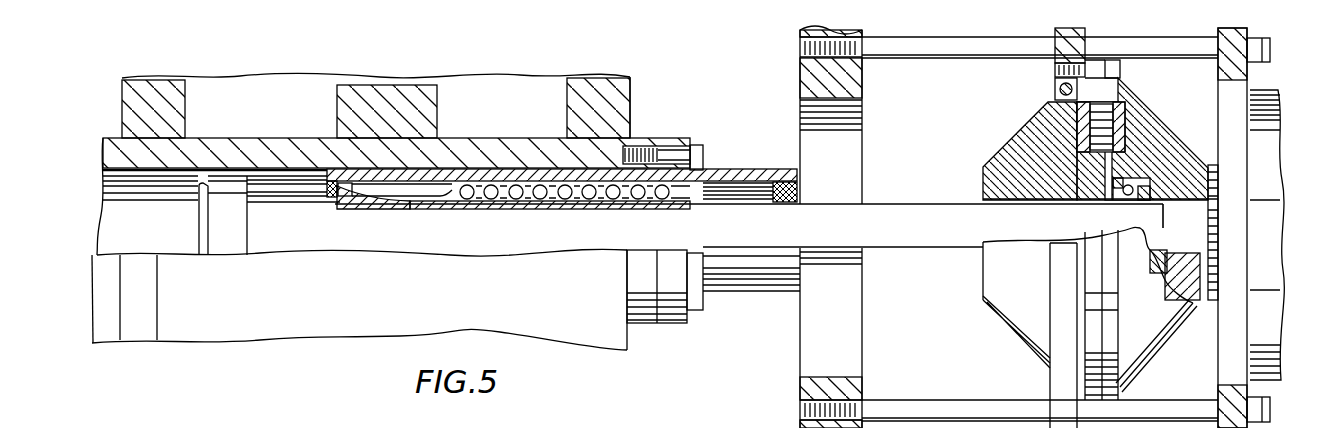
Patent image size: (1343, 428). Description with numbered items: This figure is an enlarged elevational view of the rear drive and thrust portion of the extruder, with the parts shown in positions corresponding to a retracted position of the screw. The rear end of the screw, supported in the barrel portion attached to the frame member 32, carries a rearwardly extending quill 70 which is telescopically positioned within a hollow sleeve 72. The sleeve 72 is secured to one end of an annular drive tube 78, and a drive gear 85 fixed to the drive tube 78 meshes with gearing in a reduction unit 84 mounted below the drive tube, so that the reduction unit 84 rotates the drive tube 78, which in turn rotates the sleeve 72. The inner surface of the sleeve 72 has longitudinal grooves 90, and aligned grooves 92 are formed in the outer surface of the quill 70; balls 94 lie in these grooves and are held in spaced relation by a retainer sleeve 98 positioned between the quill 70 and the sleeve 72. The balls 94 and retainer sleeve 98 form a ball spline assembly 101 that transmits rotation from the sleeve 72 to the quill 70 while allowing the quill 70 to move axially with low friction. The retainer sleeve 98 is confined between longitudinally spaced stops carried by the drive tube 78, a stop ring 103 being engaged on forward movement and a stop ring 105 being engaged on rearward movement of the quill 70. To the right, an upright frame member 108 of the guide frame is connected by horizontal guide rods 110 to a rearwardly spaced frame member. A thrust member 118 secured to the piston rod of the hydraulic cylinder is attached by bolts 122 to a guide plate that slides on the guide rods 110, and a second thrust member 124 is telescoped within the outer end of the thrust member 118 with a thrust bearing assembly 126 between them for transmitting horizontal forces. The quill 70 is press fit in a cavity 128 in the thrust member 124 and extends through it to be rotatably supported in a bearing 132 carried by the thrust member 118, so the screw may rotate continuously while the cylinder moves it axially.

The quill 70 is at (904, 206).
The hollow sleeve 72 is at (725, 174).
The drive tube 78 is at (278, 150).
The reduction unit 84 is at (625, 108).
The drive gear 85 is at (425, 116).
The grooves 90 is at (350, 192).
The grooves 92 is at (397, 198).
The balls 94 is at (515, 200).
The retainer sleeve 98 is at (450, 188).
The ball spline assembly 101 is at (605, 212).
The stop ring 103 is at (330, 186).
The stop ring 105 is at (686, 192).
The upright frame member 108 is at (856, 76).
The guide rods 110 is at (1158, 46).
The thrust member 118 is at (1155, 132).
The bolts 122 is at (1116, 70).
The second thrust member 124 is at (1015, 148).
The thrust bearing assembly 126 is at (1108, 130).
The cavity 128 is at (1005, 204).
The bearing 132 is at (1178, 162).
The frame member 32 is at (412, 427).